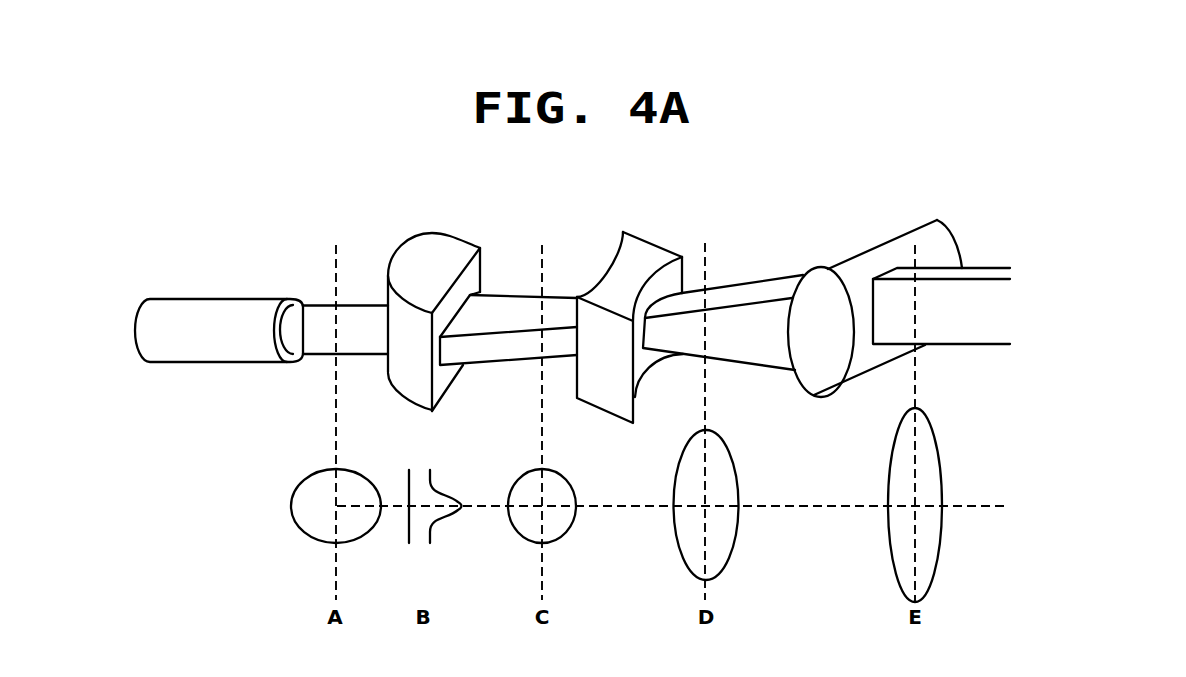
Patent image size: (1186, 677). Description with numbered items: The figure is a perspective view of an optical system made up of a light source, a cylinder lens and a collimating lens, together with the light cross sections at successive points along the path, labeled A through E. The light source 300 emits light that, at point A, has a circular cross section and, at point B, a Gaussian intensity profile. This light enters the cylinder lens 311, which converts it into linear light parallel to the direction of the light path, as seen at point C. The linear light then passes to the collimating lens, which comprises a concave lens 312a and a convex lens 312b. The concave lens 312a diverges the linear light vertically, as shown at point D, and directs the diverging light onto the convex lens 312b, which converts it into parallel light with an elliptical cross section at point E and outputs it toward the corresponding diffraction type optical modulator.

The light source 300 is at (227, 305).
The cylinder lens 311 is at (449, 241).
The concave lens 312a is at (648, 252).
The convex lens 312b is at (937, 235).